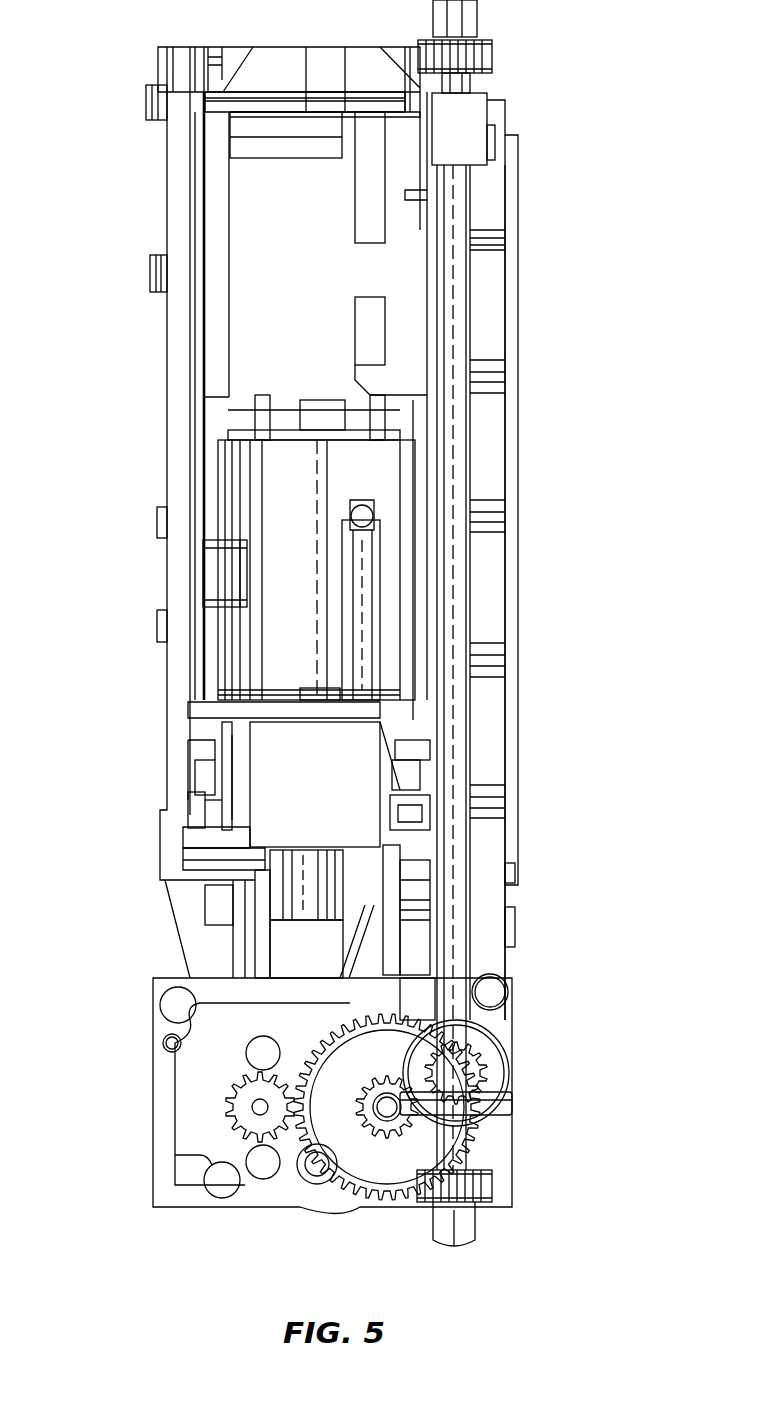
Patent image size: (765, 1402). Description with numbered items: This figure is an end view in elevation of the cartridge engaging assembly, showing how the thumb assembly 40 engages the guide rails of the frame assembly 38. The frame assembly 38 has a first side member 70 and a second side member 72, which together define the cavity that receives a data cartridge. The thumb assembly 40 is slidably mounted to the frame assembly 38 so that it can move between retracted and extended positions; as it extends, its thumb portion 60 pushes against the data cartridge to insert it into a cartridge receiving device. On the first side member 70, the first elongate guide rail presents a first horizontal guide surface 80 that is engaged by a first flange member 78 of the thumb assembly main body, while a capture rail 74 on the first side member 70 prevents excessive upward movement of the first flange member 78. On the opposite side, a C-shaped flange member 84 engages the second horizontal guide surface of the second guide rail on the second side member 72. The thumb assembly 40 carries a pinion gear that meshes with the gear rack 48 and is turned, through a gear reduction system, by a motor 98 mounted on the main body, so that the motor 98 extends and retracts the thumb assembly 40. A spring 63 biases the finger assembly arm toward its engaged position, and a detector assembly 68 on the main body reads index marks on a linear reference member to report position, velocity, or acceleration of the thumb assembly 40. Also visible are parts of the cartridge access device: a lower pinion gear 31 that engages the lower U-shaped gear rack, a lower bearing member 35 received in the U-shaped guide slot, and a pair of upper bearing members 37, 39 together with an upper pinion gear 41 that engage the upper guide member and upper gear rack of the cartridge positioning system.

The lower pinion gear 31 is at (494, 1184).
The lower bearing member 35 is at (477, 1222).
The upper bearing member 37 is at (158, 63).
The frame assembly 38 is at (158, 190).
The upper bearing member 39 is at (478, 16).
The thumb assembly 40 is at (206, 468).
The upper pinion gear 41 is at (493, 58).
The gear rack 48 is at (262, 925).
The thumb portion 60 is at (337, 777).
The spring 63 is at (382, 577).
The detector assembly 68 is at (195, 758).
The first side member 70 is at (166, 364).
The second side member 72 is at (519, 226).
The capture rail 74 is at (195, 792).
The first flange member 78 is at (195, 862).
The first horizontal guide surface 80 is at (262, 853).
The C-shaped flange member 84 is at (425, 800).
The motor 98 is at (322, 400).